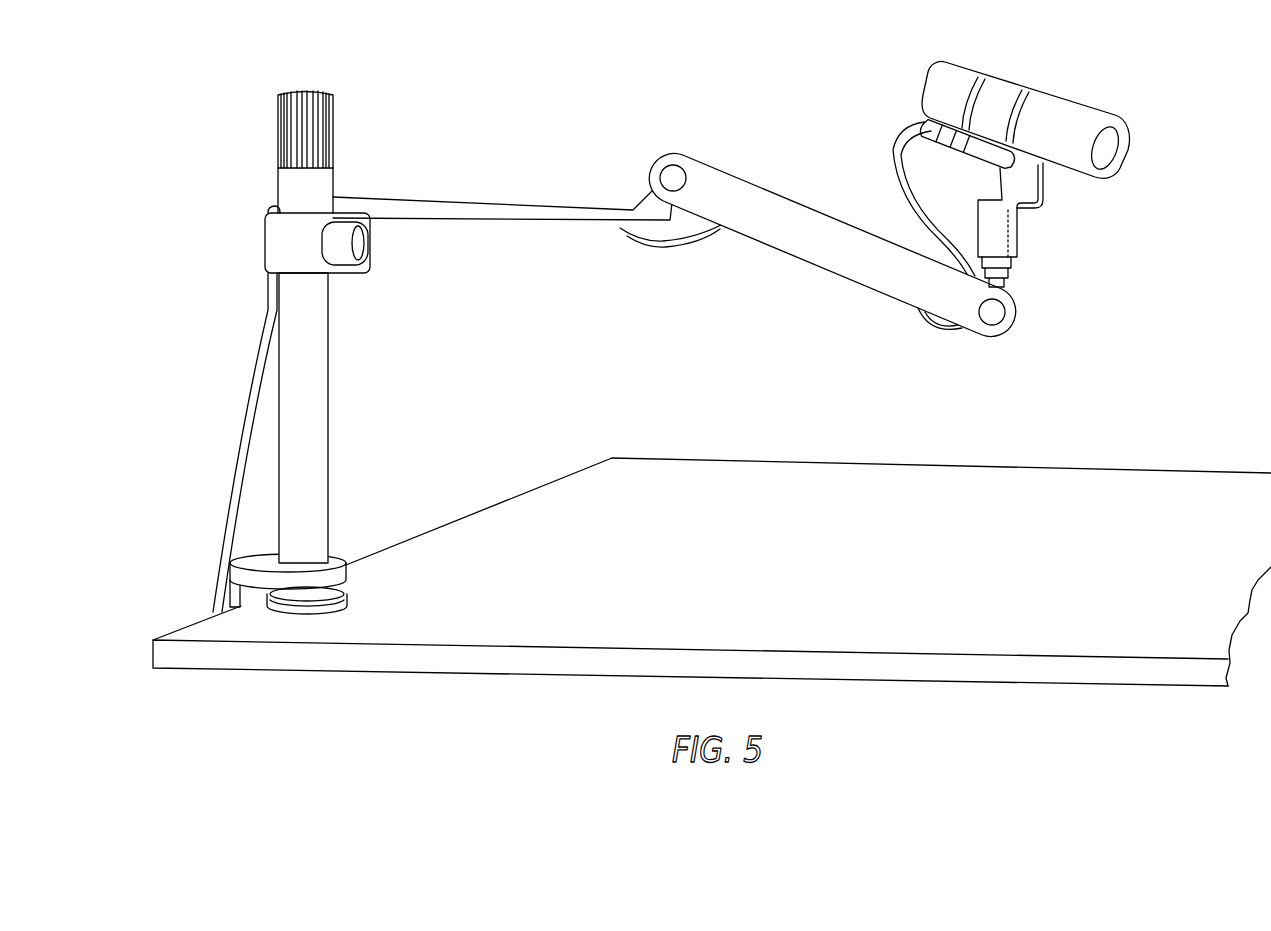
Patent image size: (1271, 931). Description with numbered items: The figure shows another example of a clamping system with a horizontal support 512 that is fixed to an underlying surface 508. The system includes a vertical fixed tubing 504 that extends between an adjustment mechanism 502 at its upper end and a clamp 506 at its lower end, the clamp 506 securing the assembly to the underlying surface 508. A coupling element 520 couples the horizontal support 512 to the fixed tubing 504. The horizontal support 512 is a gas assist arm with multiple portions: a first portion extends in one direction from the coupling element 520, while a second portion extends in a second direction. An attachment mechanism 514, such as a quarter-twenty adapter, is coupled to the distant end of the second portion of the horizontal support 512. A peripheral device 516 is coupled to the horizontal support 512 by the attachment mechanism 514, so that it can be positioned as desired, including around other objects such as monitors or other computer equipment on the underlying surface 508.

The adjustment mechanism 502 is at (335, 122).
The fixed tubing 504 is at (322, 416).
The clamp 506 is at (258, 582).
The underlying surface 508 is at (1045, 488).
The horizontal support 512 is at (455, 206).
The attachment mechanism 514 is at (1008, 288).
The peripheral device 516 is at (1067, 112).
The coupling element 520 is at (280, 243).